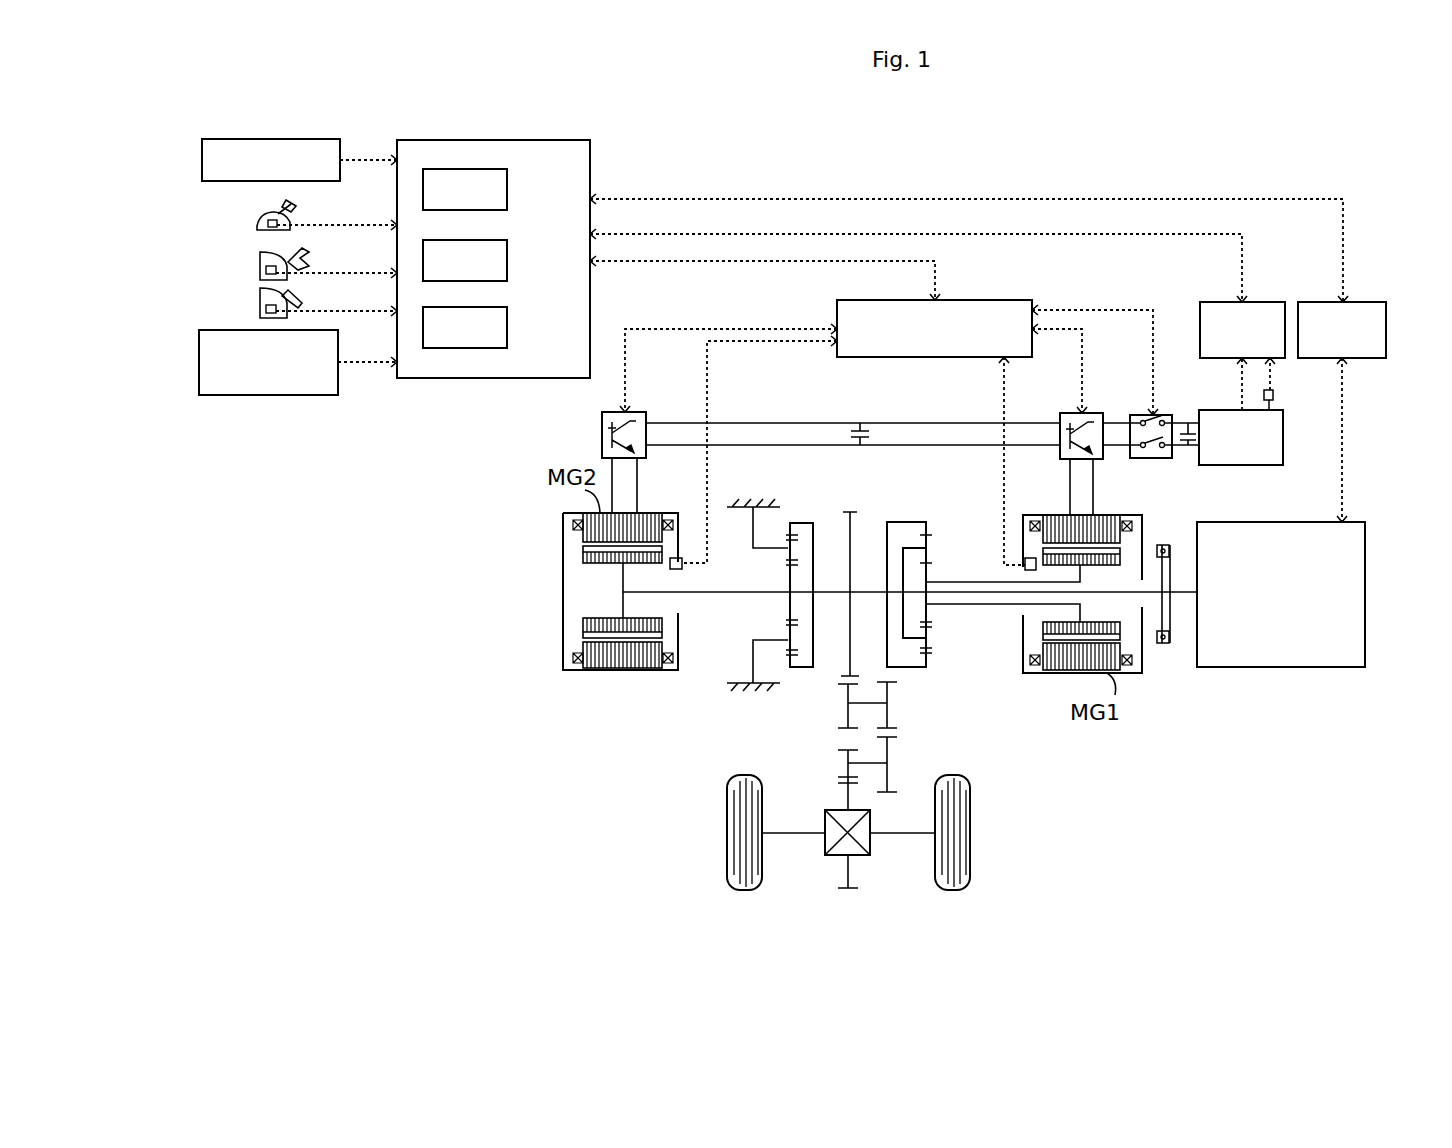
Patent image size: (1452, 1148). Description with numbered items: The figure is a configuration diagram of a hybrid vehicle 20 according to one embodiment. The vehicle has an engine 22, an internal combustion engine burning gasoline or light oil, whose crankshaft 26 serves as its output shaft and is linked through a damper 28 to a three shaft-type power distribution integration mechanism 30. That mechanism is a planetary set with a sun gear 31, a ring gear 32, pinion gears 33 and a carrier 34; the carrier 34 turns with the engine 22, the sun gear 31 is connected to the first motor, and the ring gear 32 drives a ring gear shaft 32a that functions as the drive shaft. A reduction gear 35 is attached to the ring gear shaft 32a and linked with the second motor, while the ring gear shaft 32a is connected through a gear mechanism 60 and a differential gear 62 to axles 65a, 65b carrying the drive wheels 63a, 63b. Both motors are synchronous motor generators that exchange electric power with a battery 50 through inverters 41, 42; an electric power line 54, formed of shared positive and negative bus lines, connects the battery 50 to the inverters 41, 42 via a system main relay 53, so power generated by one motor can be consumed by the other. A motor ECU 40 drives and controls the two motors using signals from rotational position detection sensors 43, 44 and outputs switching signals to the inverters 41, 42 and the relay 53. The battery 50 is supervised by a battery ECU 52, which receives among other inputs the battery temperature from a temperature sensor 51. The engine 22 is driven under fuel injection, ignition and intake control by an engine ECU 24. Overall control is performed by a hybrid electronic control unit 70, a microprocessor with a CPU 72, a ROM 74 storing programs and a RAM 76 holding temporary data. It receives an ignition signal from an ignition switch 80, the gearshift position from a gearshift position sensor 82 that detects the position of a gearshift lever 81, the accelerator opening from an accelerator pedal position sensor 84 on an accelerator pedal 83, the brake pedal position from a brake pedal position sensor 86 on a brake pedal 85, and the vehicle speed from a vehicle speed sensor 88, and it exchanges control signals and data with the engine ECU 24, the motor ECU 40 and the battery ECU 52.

The hybrid vehicle 20 is at (1115, 172).
The engine 22 is at (1367, 578).
The engine electronic control unit 24 is at (1362, 302).
The crankshaft 26 is at (1180, 593).
The damper 28 is at (1167, 643).
The power distribution integration mechanism 30 is at (983, 578).
The sun gear 31 is at (927, 610).
The ring gear 32 is at (927, 657).
The ring gear shaft 32a is at (832, 590).
The pinion gear 33 is at (927, 635).
The carrier 34 is at (900, 560).
The reduction gear 35 is at (793, 502).
The motor electronic control unit 40 is at (975, 300).
The inverter 41 is at (1087, 413).
The inverter 42 is at (637, 412).
The rotational position detection sensor 43 is at (1027, 558).
The rotational position detection sensor 44 is at (675, 558).
The battery 50 is at (1240, 466).
The temperature sensor 51 is at (1276, 393).
The battery electronic control unit 52 is at (1220, 302).
The system main relay 53 is at (1150, 414).
The electric power line 54 is at (913, 445).
The gear mechanism 60 is at (928, 743).
The differential gear 62 is at (872, 845).
The drive wheel 63a is at (722, 865).
The drive wheel 63b is at (972, 865).
The axle 65a is at (780, 832).
The axle 65b is at (893, 832).
The hybrid electronic control unit 70 is at (492, 140).
The CPU 72 is at (508, 188).
The ROM 74 is at (508, 260).
The RAM 76 is at (508, 328).
The ignition switch 80 is at (202, 152).
The gearshift lever 81 is at (292, 207).
The gearshift position sensor 82 is at (268, 223).
The accelerator pedal 83 is at (287, 257).
The accelerator pedal position sensor 84 is at (266, 272).
The brake pedal 85 is at (283, 293).
The brake pedal position sensor 86 is at (266, 310).
The vehicle speed sensor 88 is at (199, 355).